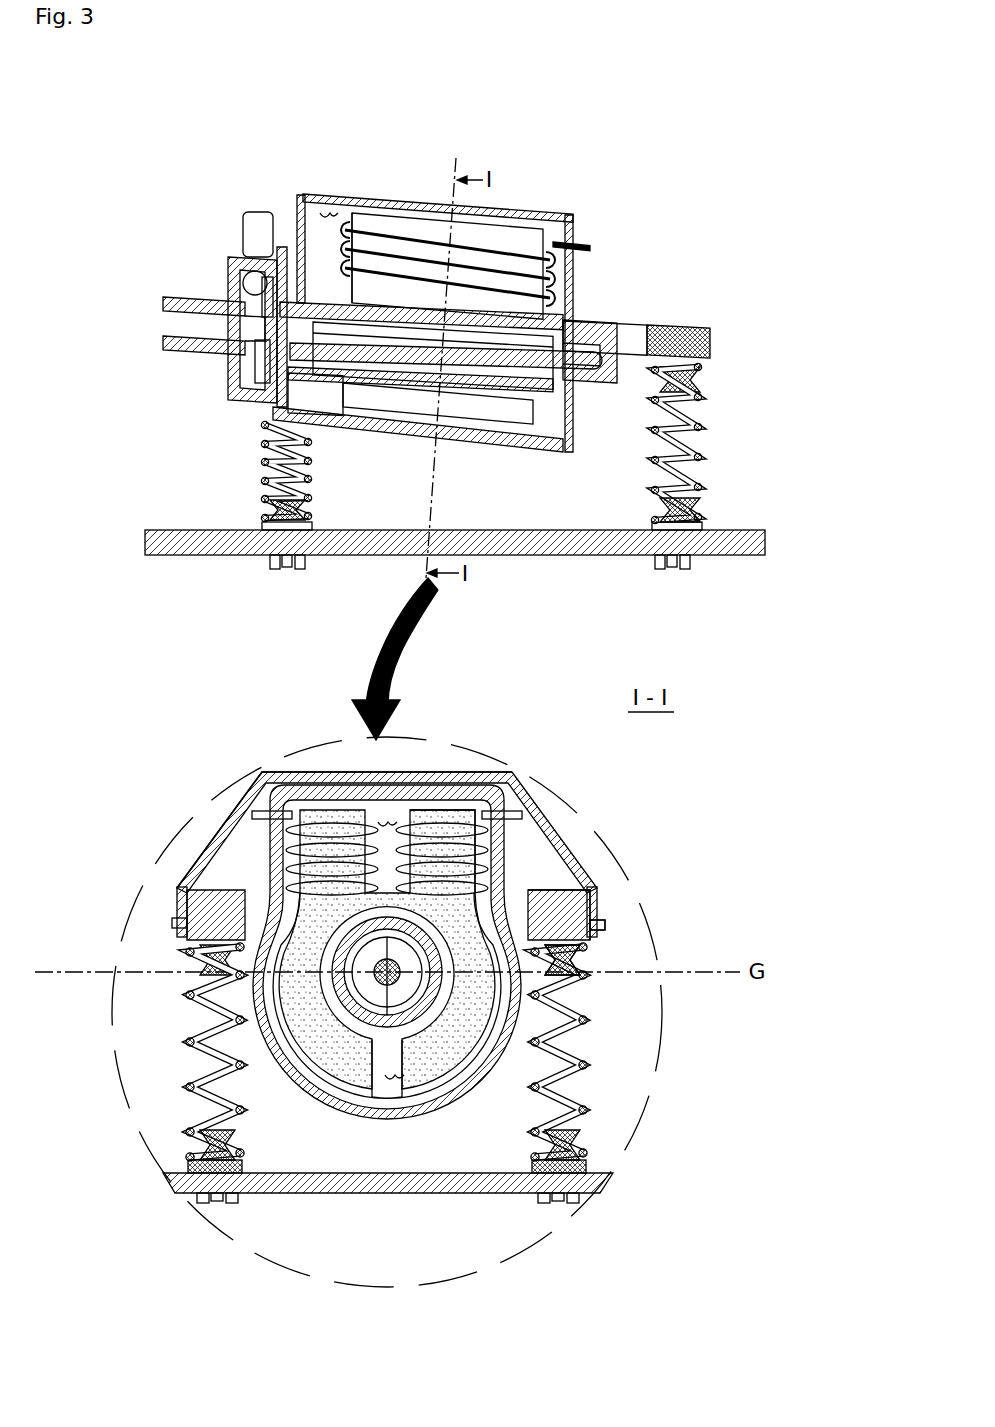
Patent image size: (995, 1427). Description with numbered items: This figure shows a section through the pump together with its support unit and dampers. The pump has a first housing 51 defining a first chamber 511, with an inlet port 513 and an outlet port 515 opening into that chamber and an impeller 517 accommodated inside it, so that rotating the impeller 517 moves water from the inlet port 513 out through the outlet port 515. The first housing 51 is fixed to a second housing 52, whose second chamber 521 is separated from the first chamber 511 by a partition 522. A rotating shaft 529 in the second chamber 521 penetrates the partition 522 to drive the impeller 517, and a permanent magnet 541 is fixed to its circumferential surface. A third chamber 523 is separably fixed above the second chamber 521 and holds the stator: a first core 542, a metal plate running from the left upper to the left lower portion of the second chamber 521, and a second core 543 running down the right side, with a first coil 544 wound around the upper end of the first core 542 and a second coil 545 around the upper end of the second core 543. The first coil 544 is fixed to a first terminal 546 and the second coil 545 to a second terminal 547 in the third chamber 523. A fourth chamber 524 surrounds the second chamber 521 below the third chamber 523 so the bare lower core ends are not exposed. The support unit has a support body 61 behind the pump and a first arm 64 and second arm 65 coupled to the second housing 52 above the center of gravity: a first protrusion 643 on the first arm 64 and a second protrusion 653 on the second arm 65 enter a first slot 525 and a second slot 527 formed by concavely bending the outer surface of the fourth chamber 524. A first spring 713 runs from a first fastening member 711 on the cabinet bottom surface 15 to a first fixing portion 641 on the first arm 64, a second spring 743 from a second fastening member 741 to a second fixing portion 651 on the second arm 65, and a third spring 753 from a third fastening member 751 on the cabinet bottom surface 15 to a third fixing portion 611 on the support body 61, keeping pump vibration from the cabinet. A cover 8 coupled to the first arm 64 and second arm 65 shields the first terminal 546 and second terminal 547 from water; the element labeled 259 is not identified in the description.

The cover 8 is at (215, 870).
The cabinet bottom surface 15 is at (600, 530).
The first housing 51 is at (238, 270).
The second housing 52 is at (360, 100).
The support body 61 is at (712, 345).
The first arm 64 is at (632, 345).
The second arm 65 is at (172, 923).
The rotor shaft 259 is at (383, 1023).
The first chamber 511 is at (248, 290).
The inlet port 513 is at (168, 325).
The outlet port 515 is at (256, 232).
The impeller 517 is at (262, 360).
The second chamber 521 is at (303, 250).
The partition 522 is at (300, 212).
The third chamber 523 is at (332, 218).
The fourth chamber 524 is at (463, 420).
The first slot 525 is at (586, 900).
The second slot 527 is at (192, 900).
The rotating shaft 529 is at (505, 350).
The permanent magnet 541 is at (352, 360).
The first core 542 is at (330, 810).
The second core 543 is at (530, 245).
The first coil 544 is at (283, 800).
The second coil 545 is at (352, 240).
The first terminal 546 is at (248, 800).
The second terminal 547 is at (592, 248).
The third fixing portion 611 is at (692, 372).
The first fixing portion 641 is at (583, 955).
The first protrusion 643 is at (585, 920).
The second fixing portion 651 is at (190, 955).
The second protrusion 653 is at (195, 920).
The first fastening member 711 is at (270, 512).
The first spring 713 is at (268, 462).
The second fastening member 741 is at (200, 1140).
The second spring 743 is at (190, 1075).
The third fastening member 751 is at (698, 515).
The third spring 753 is at (700, 418).